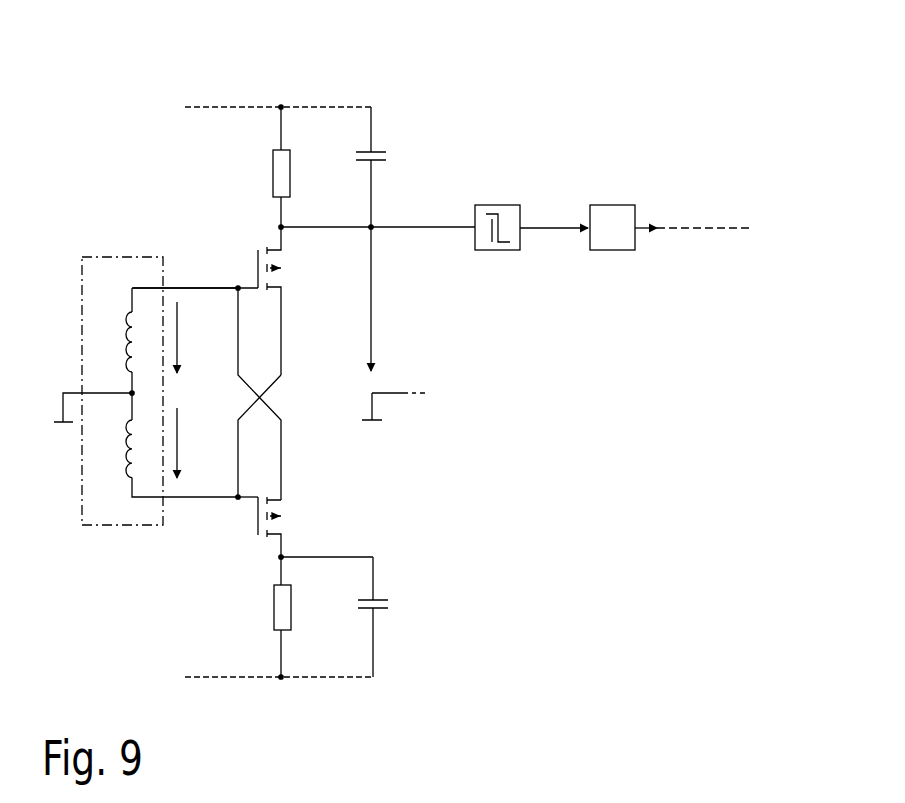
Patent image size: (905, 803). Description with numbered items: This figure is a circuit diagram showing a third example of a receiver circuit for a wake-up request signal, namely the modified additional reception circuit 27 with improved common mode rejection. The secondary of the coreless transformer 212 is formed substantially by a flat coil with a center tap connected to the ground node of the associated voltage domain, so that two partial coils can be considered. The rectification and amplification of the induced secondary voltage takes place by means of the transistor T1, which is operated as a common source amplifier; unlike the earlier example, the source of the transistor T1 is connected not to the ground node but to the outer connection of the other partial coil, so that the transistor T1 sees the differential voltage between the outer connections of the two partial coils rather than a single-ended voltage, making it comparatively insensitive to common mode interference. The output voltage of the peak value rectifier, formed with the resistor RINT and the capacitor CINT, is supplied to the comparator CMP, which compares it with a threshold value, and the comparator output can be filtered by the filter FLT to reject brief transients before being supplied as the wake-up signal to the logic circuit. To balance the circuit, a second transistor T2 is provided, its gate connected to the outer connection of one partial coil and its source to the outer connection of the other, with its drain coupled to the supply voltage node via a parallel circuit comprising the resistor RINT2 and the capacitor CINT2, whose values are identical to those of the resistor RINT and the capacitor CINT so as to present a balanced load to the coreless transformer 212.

The additional reception circuit 27 is at (777, 103).
The coreless transformer 212 is at (132, 376).
The resistor RINT is at (303, 173).
The capacitor CINT is at (394, 167).
The comparator CMP is at (503, 205).
The filter FLT is at (612, 227).
The transistor T1 is at (256, 301).
The second transistor T2 is at (259, 527).
The resistor RINT2 is at (307, 610).
The capacitor CINT2 is at (398, 617).